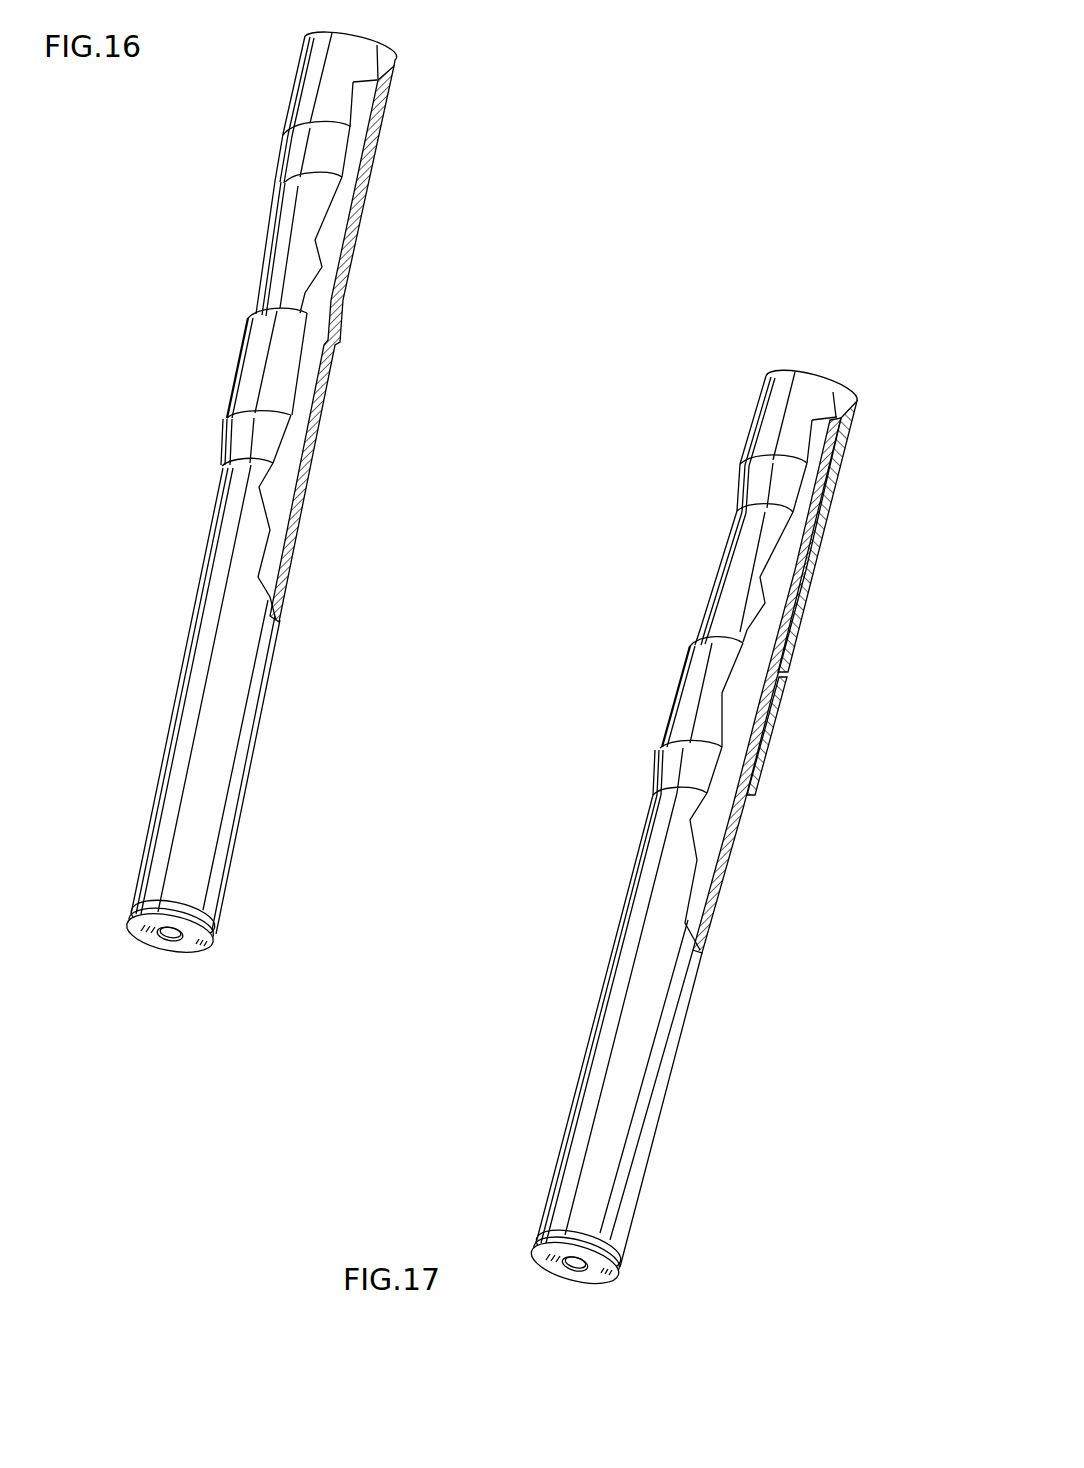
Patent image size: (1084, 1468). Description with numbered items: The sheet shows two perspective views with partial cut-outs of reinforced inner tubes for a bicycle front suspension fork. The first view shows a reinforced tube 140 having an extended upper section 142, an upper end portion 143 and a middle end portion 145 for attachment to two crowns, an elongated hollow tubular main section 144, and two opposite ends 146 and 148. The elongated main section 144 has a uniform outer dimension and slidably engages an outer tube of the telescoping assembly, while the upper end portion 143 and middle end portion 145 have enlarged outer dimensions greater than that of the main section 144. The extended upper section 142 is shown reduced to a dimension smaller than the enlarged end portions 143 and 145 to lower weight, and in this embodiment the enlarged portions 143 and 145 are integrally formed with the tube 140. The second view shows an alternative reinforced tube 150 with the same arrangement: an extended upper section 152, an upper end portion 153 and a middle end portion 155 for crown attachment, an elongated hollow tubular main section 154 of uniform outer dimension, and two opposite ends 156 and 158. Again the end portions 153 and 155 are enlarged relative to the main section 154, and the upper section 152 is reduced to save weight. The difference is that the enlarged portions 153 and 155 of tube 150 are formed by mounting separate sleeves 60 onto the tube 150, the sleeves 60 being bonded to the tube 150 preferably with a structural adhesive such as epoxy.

In FIG. 16, the reinforced tube 140 is at (173, 705).
In FIG. 16, the extended upper section 142 is at (270, 237).
In FIG. 16, the upper end portion 143 is at (288, 82).
In FIG. 16, the elongated hollow tubular main section 144 is at (237, 772).
In FIG. 16, the middle end portion 145 is at (235, 380).
In FIG. 16, the end 146 is at (388, 42).
In FIG. 16, the end 148 is at (194, 949).
In FIG. 17, the reinforced tube 150 is at (603, 868).
In FIG. 17, the extended upper section 152 is at (810, 558).
In FIG. 17, the upper end portion 153 is at (752, 425).
In FIG. 17, the elongated hollow tubular main section 154 is at (673, 1050).
In FIG. 17, the middle end portion 155 is at (670, 710).
In FIG. 17, the end 156 is at (847, 390).
In FIG. 17, the end 158 is at (593, 1283).
In FIG. 17, the sleeve 60 is at (838, 474).